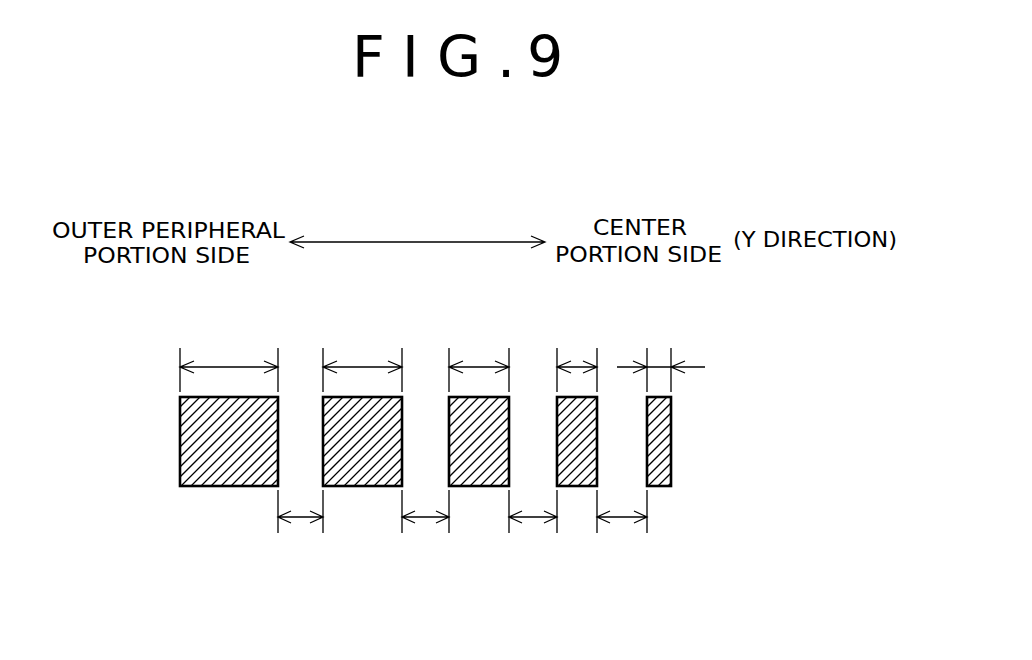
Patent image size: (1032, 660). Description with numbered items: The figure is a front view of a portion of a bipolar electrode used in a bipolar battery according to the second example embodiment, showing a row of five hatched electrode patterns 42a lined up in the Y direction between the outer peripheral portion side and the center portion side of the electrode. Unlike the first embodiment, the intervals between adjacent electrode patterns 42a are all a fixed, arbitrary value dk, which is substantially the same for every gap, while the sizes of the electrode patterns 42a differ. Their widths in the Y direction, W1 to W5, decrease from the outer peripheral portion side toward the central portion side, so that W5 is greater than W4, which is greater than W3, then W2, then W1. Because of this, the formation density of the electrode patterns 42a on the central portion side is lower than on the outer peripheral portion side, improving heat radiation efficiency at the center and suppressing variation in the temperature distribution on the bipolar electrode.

The electrode pattern 42a is at (223, 465).
The width of electrode pattern W1 is at (661, 357).
The width of electrode pattern W2 is at (577, 357).
The width of electrode pattern W3 is at (479, 357).
The width of electrode pattern W4 is at (362, 357).
The width of electrode pattern W5 is at (229, 357).
The interval between adjacent electrode patterns dk is at (462, 520).